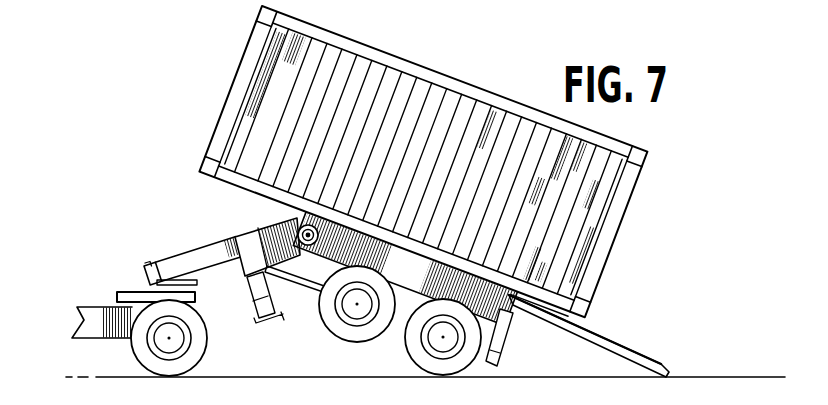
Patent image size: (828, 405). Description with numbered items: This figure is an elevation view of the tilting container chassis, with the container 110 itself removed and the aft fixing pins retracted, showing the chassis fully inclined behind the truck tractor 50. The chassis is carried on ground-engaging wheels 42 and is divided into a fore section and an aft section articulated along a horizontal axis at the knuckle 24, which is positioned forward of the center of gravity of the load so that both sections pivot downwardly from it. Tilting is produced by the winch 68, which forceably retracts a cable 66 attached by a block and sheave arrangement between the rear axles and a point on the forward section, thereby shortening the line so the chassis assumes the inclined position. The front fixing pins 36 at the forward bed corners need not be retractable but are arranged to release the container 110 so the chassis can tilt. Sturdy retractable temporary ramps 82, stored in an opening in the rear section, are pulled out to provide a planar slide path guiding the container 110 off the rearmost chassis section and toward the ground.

The container 110 is at (400, 70).
The knuckle 24 is at (297, 223).
The winch 68 is at (249, 238).
The front fixing pins 36 is at (146, 263).
The truck tractor 50 is at (99, 315).
The cable 66 is at (295, 282).
The wheels 42 is at (405, 349).
The retractable temporary ramps 82 is at (613, 345).